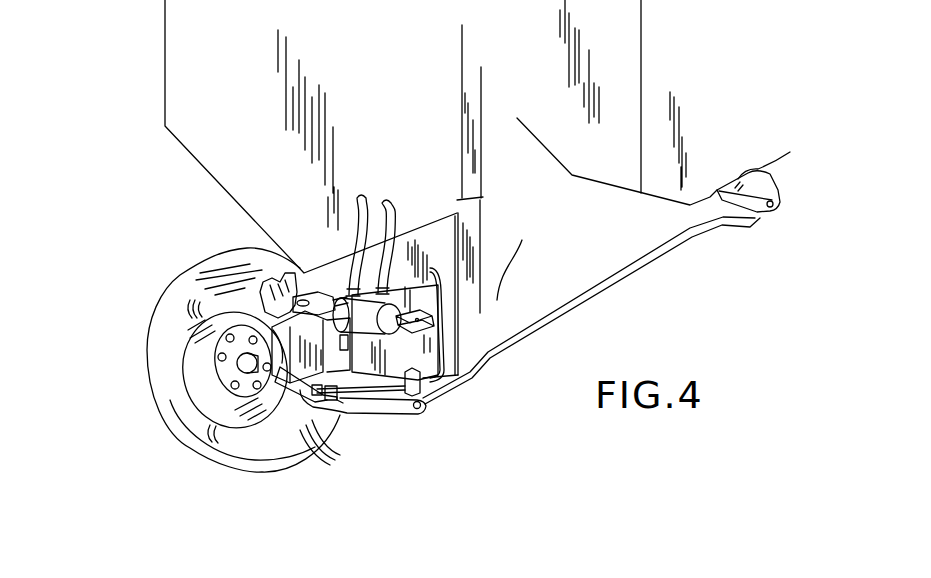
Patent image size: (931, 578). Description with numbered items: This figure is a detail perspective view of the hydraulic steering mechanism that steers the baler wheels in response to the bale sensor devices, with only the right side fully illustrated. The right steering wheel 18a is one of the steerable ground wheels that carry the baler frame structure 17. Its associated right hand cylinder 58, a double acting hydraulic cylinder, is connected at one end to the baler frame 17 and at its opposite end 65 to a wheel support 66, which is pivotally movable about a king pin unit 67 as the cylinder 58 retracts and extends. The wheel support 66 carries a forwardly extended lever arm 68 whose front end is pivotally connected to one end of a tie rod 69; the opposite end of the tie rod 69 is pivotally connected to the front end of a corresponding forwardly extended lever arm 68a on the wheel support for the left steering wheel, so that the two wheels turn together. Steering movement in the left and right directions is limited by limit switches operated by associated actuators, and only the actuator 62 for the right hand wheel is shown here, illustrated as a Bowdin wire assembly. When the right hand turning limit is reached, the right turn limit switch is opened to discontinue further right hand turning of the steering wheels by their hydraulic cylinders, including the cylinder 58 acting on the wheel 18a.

The right steering wheel 18a is at (164, 332).
The wheel support 66 is at (254, 289).
The opposite end of cylinder 65 is at (306, 292).
The right hand cylinder 58 is at (381, 338).
The baler frame structure 17 is at (472, 289).
The tie rod 69 is at (608, 289).
The forwardly extended lever arm 68a is at (752, 195).
The king pin unit 67 is at (341, 405).
The actuator 62 is at (372, 395).
The forwardly extended lever arm 68 is at (395, 405).